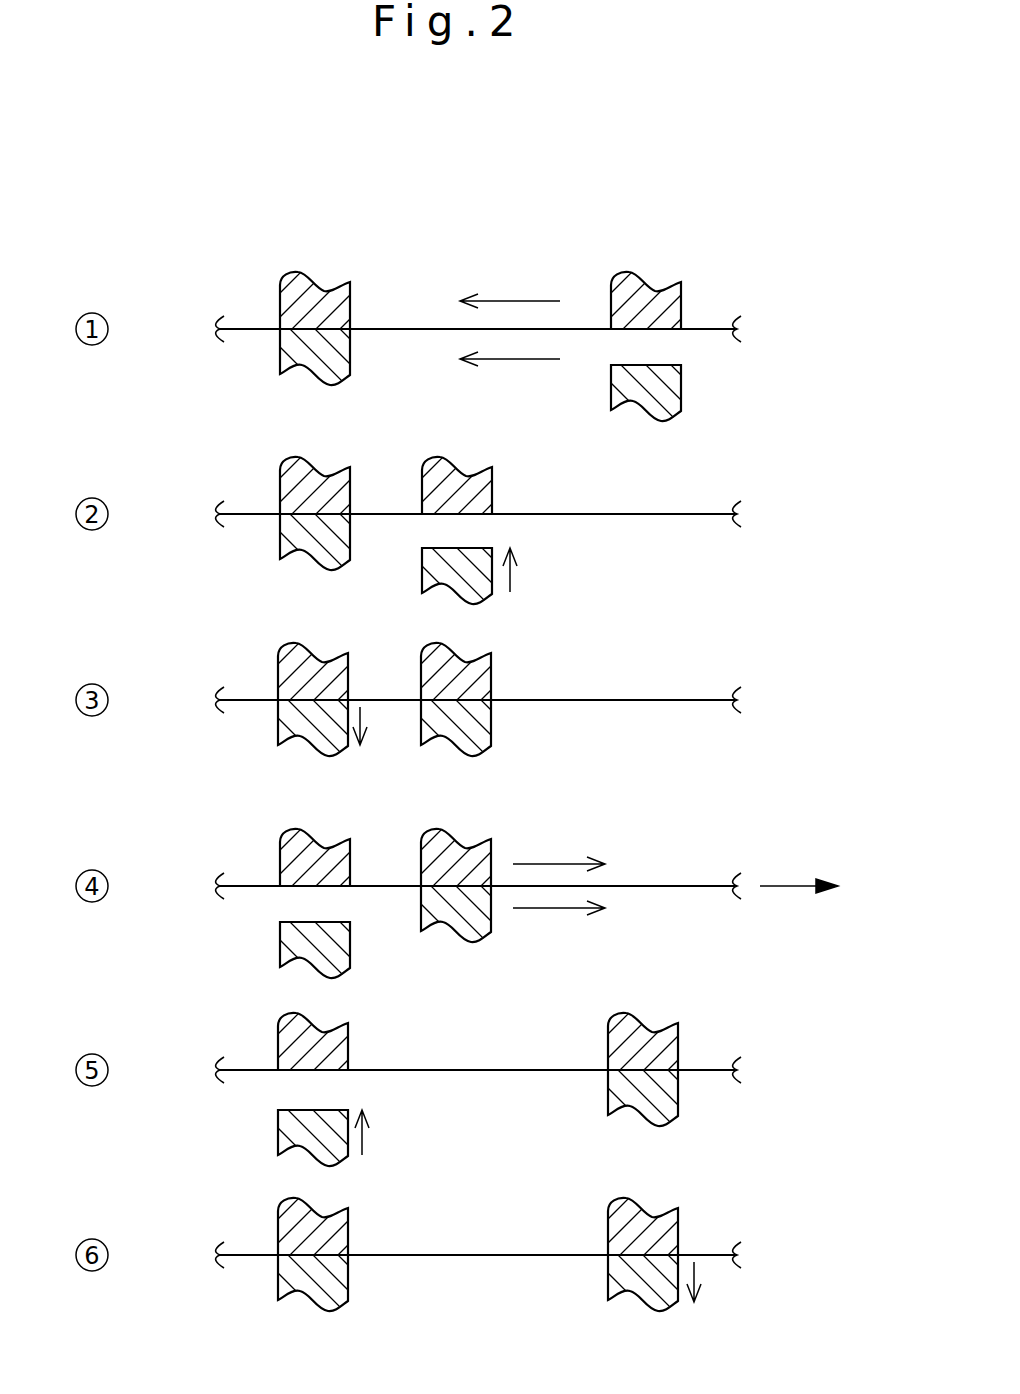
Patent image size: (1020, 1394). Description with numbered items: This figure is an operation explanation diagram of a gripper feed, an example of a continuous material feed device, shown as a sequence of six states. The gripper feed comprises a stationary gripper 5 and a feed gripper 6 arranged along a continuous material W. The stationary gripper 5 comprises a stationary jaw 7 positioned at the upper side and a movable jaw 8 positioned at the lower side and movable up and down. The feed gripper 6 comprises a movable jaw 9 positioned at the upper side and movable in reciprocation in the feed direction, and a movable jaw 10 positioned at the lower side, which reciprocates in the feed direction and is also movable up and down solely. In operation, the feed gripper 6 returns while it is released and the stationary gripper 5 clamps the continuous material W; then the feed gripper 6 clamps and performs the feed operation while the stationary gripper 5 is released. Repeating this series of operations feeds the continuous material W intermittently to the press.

The stationary gripper 5 is at (240, 300).
The feed gripper 6 is at (711, 289).
The stationary jaw 7 is at (320, 273).
The movable jaw 8 is at (300, 368).
The movable jaw 9 is at (650, 275).
The movable jaw 10 is at (636, 401).
The continuous material W is at (706, 332).